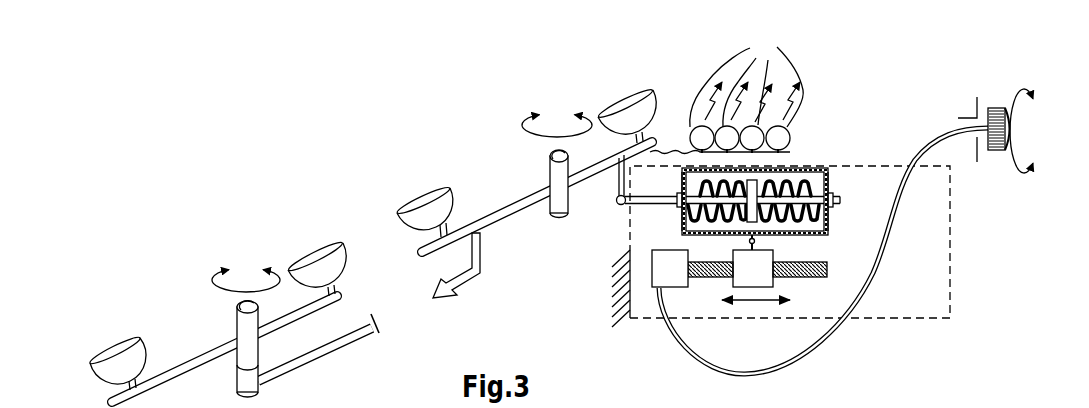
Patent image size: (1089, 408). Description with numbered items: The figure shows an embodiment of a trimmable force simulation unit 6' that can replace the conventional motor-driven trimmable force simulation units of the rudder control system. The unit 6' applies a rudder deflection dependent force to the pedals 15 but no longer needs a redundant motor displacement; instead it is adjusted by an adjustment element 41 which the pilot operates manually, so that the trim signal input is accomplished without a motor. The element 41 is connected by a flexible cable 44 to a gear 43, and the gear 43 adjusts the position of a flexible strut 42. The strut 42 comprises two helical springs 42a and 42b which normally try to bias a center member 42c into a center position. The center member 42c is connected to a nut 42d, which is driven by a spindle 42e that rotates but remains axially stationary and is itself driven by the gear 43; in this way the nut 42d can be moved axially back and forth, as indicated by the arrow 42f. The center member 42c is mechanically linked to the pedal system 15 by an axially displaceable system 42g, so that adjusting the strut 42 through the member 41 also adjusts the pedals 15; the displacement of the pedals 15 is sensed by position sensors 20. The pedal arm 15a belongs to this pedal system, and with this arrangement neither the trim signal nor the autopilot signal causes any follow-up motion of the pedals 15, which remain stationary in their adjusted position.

The first tilting ladle arm 15a is at (183, 367).
The pedals 15 is at (487, 213).
The position sensors 20 is at (726, 94).
The adjustment element 41 is at (997, 108).
The flexible strut 42 is at (818, 176).
The helical spring 42a is at (682, 221).
The helical spring 42b is at (828, 225).
The center member 42c is at (752, 187).
The nut 42d is at (768, 280).
The spindle 42e is at (827, 277).
The arrow 42f is at (752, 305).
The axially displaceable system 42g is at (617, 204).
The gear 43 is at (652, 287).
The flexible cable 44 is at (834, 331).
The trimmable force simulation unit 6' is at (812, 242).